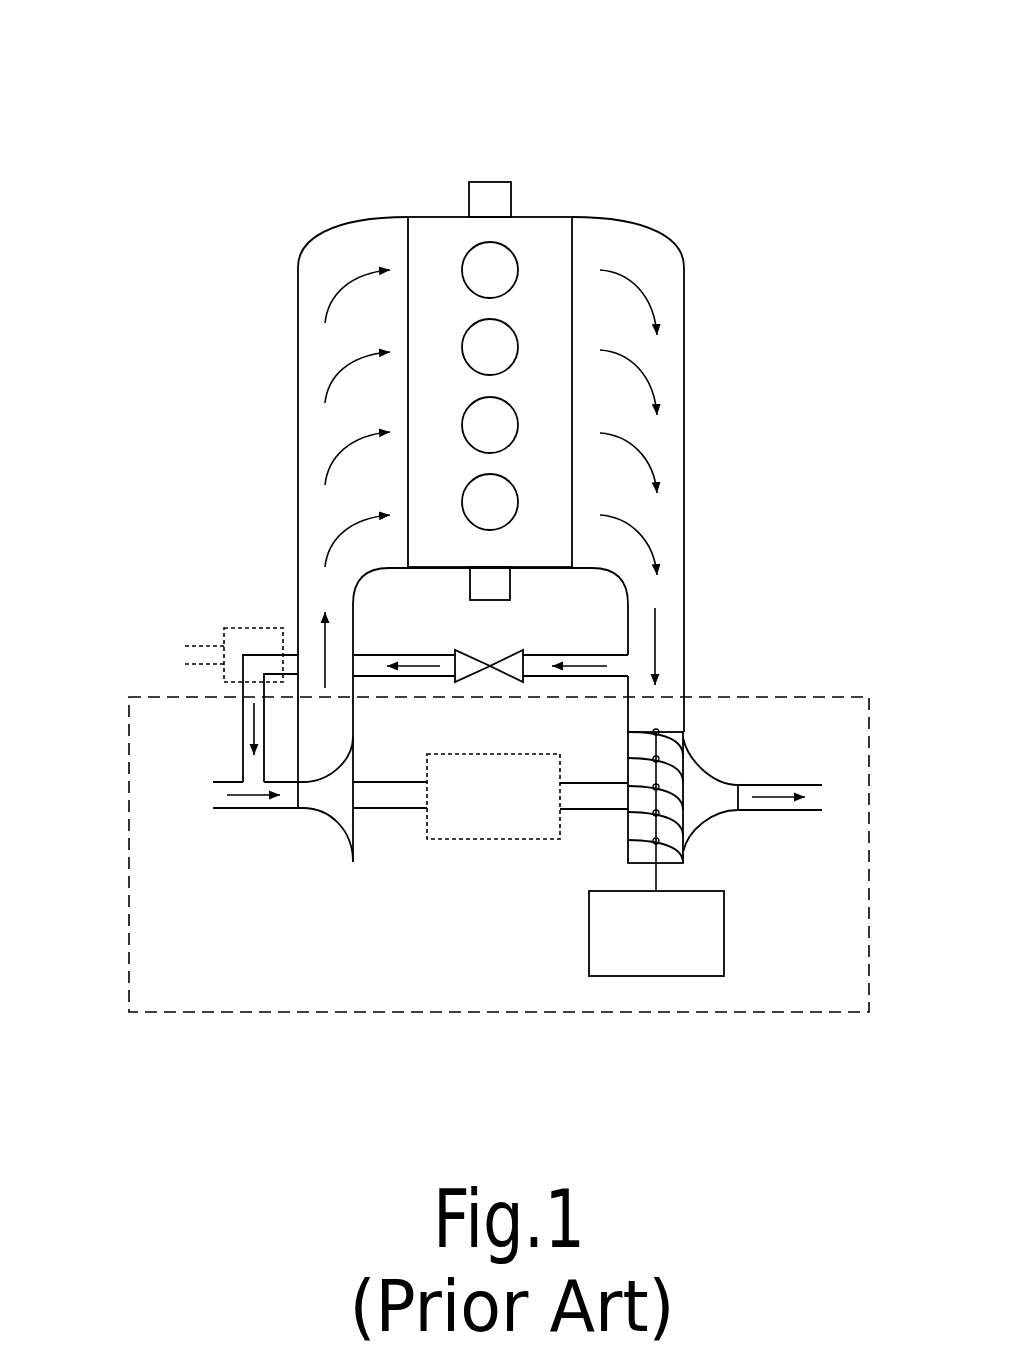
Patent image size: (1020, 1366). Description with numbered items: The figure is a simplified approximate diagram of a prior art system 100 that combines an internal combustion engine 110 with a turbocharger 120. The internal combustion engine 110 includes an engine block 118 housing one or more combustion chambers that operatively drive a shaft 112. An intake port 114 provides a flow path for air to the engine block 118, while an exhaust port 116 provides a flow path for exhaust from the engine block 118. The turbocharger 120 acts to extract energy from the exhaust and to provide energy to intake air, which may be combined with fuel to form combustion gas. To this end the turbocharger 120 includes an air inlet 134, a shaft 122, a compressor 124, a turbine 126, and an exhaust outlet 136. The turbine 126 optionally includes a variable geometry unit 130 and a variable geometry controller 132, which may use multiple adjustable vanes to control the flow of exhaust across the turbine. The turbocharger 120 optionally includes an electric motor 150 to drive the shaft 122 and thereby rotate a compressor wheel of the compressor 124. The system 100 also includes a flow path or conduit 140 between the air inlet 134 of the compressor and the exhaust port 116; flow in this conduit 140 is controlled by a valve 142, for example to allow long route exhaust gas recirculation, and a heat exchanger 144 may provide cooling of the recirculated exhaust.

The prior art system 100 is at (520, 98).
The internal combustion engine 110 is at (448, 217).
The shaft 112 is at (488, 182).
The intake port 114 is at (318, 238).
The exhaust port 116 is at (662, 238).
The engine block 118 is at (468, 560).
The turbocharger 120 is at (742, 697).
The shaft 122 is at (405, 808).
The compressor 124 is at (352, 760).
The turbine 126 is at (692, 757).
The variable geometry unit 130 is at (627, 757).
The variable geometry controller 132 is at (635, 945).
The air inlet 134 is at (235, 782).
The exhaust outlet 136 is at (767, 785).
The flow path or conduit 140 is at (385, 655).
The valve 142 is at (522, 650).
The heat exchanger 144 is at (235, 628).
The electric motor 150 is at (472, 808).